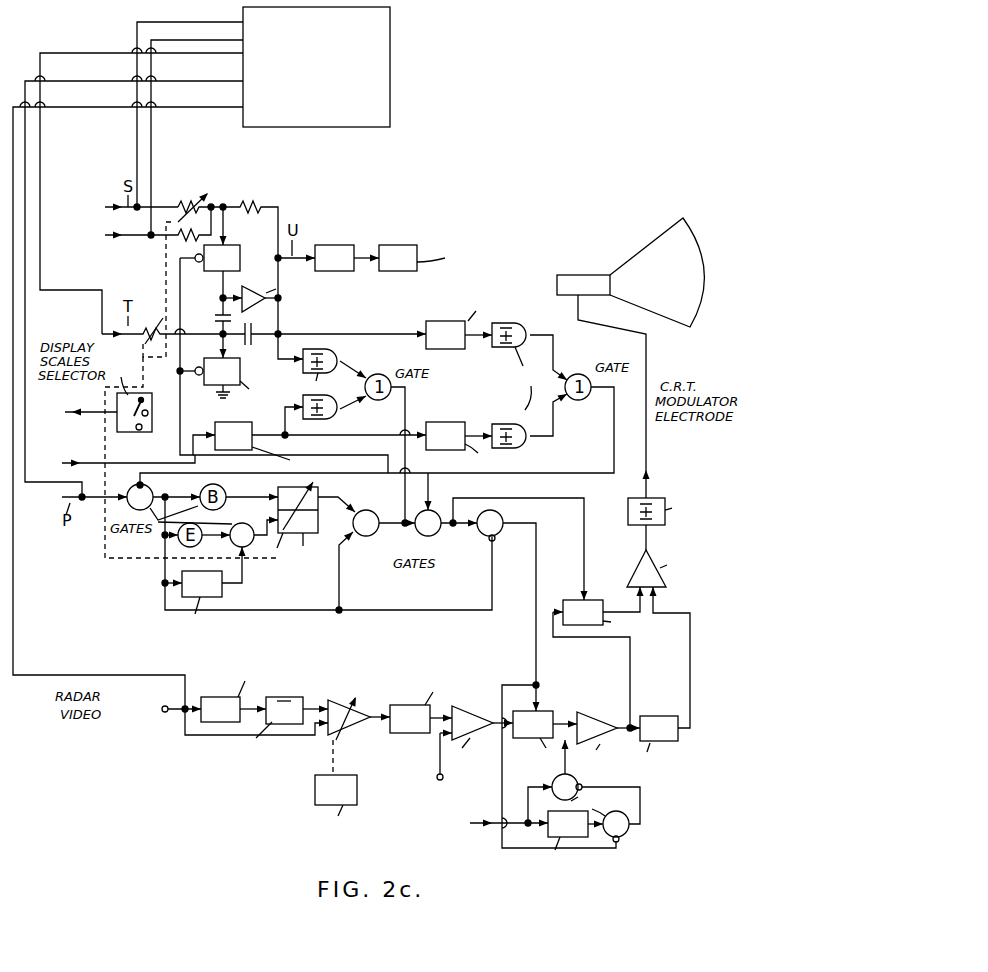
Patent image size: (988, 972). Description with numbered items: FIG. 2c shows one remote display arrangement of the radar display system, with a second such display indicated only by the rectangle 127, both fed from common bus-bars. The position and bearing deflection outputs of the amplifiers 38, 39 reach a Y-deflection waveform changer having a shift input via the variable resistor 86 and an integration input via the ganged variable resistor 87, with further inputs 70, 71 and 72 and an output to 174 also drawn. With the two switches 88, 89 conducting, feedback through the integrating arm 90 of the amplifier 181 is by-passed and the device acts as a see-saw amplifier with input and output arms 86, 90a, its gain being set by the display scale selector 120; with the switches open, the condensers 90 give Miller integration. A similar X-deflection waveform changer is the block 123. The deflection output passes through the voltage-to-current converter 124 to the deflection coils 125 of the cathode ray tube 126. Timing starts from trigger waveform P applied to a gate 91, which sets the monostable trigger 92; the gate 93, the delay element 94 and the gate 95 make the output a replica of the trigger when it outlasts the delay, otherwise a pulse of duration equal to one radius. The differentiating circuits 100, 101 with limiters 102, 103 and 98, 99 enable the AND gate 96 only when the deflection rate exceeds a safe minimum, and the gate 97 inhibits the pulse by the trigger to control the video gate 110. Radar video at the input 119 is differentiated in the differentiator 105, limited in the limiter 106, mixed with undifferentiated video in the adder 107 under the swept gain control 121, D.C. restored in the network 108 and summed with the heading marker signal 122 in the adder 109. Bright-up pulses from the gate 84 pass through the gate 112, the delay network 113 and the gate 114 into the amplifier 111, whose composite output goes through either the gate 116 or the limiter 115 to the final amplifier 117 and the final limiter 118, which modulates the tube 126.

The second display 127 is at (333, 112).
The amplifier 38 is at (123, 201).
The variable resistor 86 is at (199, 198).
The resistor 90a is at (263, 269).
The input from 70 is at (154, 232).
The input from 71 is at (154, 232).
The switch 88 is at (223, 282).
The amplifier 181 is at (283, 290).
The amplifier 39 is at (90, 327).
The ganged variable resistor 87 is at (161, 289).
The integrating arm 90 is at (250, 330).
The output to 174 is at (84, 397).
The display scale selector 120 is at (134, 426).
The switch 89 is at (223, 382).
The X-deflection waveform changer 123 is at (313, 439).
The input 72 is at (224, 459).
The limiter 98 is at (340, 355).
The limiter 99 is at (340, 415).
The differentiating circuit 100 is at (459, 317).
The differentiating circuit 101 is at (473, 442).
The limiter 102 is at (530, 356).
The limiter 103 is at (530, 419).
The gate 91 is at (163, 494).
The monostable trigger 92 is at (320, 492).
The gate 93 is at (254, 527).
The delay element 94 is at (222, 596).
The gate 95 is at (393, 556).
The AND gate 96 is at (435, 536).
The gate 97 is at (487, 535).
The gate 116 is at (600, 657).
The final limiter 118 is at (661, 524).
The final amplifier 117 is at (656, 639).
The limiter 115 is at (665, 741).
The cathode ray tube 126 is at (672, 303).
The voltage-to-current converter 124 is at (328, 242).
The deflection coils 125 is at (470, 257).
The radar video input 119 is at (178, 702).
The differentiator 105 is at (250, 694).
The limiter 106 is at (271, 719).
The adder 107 is at (359, 719).
The swept gain control 121 is at (305, 800).
The D.C. restoring network 108 is at (422, 705).
The adder 109 is at (479, 724).
The heading marker signal 122 is at (457, 759).
The gate 110 is at (543, 736).
The amplifier 111 is at (604, 724).
The gate 112 is at (584, 782).
The gate 84 is at (494, 825).
The delay network 113 is at (569, 839).
The gate 114 is at (632, 829).